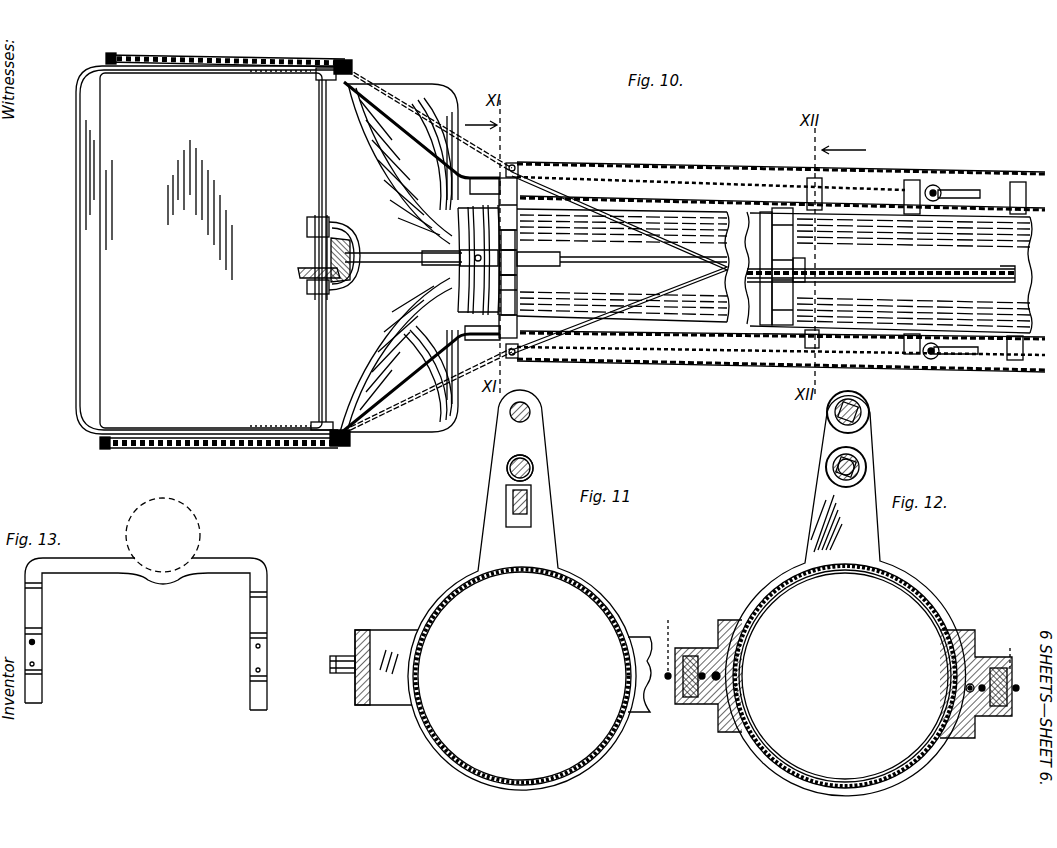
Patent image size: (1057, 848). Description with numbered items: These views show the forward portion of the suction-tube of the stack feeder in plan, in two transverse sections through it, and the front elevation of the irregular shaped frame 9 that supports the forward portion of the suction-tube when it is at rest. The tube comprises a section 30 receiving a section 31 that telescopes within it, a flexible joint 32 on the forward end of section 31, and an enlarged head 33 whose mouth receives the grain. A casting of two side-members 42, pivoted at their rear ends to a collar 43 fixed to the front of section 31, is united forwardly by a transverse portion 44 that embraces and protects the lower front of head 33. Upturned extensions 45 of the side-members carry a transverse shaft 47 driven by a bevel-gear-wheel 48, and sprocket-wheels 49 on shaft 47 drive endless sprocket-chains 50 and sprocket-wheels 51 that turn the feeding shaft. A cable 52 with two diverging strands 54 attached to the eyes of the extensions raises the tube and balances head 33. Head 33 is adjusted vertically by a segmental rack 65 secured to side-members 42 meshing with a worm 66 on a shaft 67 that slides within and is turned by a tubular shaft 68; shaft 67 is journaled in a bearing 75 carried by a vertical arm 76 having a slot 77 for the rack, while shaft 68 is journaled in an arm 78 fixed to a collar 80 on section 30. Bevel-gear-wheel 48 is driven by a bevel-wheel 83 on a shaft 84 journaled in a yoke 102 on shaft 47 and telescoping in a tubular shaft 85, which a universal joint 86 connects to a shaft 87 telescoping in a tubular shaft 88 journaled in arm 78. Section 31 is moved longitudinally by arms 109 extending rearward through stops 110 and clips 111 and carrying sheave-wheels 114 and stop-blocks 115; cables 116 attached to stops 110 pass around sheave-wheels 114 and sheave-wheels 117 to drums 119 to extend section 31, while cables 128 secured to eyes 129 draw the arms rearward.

In FIG. 13, the irregular shaped frame 9 is at (146, 634).
In FIG. 12, the section 30 is at (902, 586).
In FIG. 11, the section 31 is at (522, 676).
In FIG. 12, the section 31 is at (928, 610).
In FIG. 13, the section 31 is at (163, 535).
In FIG. 10, the flexible joint 32 is at (484, 340).
In FIG. 10, the enlarged head 33 is at (211, 250).
In FIG. 10, the side-members 42 is at (186, 57).
In FIG. 10, the collar 43 is at (520, 214).
In FIG. 11, the collar 43 is at (446, 584).
In FIG. 10, the transverse portion 44 is at (76, 264).
In FIG. 10, the upturned extensions 45 is at (318, 78).
In FIG. 10, the transverse shaft 47 is at (319, 178).
In FIG. 10, the bevel-gear-wheel 48 is at (300, 270).
In FIG. 10, the sprocket-wheels 49 is at (348, 62).
In FIG. 10, the endless sprocket-chains 50 is at (238, 57).
In FIG. 10, the sprocket-wheels 51 is at (106, 55).
In FIG. 10, the cable 52 is at (893, 270).
In FIG. 10, the strands 54 is at (404, 110).
In FIG. 10, the segmental rack 65 is at (450, 232).
In FIG. 11, the segmental rack 65 is at (513, 498).
In FIG. 10, the worm 66 is at (520, 292).
In FIG. 11, the worm 66 is at (507, 470).
In FIG. 11, the shaft 67 is at (534, 466).
In FIG. 12, the shaft 67 is at (834, 468).
In FIG. 12, the tubular shaft 68 is at (860, 468).
In FIG. 10, the bearing 75 is at (530, 256).
In FIG. 10, the vertical arm 76 is at (520, 272).
In FIG. 11, the vertical arm 76 is at (520, 456).
In FIG. 11, the slot 77 is at (508, 524).
In FIG. 10, the arm 78 is at (800, 254).
In FIG. 12, the arm 78 is at (833, 523).
In FIG. 10, the collar 80 is at (798, 228).
In FIG. 12, the collar 80 is at (768, 588).
In FIG. 10, the bevel-wheel 83 is at (320, 240).
In FIG. 10, the shaft 84 is at (392, 253).
In FIG. 10, the tubular shaft 85 is at (426, 262).
In FIG. 10, the universal joint 86 is at (512, 240).
In FIG. 10, the shaft 87 is at (622, 258).
In FIG. 11, the shaft 87 is at (532, 412).
In FIG. 12, the shaft 87 is at (866, 420).
In FIG. 10, the tubular shaft 88 is at (962, 270).
In FIG. 12, the tubular shaft 88 is at (862, 412).
In FIG. 10, the yoke 102 is at (336, 293).
In FIG. 10, the arms 109 is at (975, 190).
In FIG. 12, the arms 109 is at (690, 656).
In FIG. 10, the stops 110 is at (812, 178).
In FIG. 12, the stops 110 is at (680, 704).
In FIG. 10, the clips 111 is at (910, 182).
In FIG. 10, the sheave-wheels 114 is at (935, 185).
In FIG. 10, the stop-blocks 115 is at (824, 186).
In FIG. 10, the cables 116 is at (698, 166).
In FIG. 12, the cables 116 is at (1000, 650).
In FIG. 10, the sheave-wheels 117 is at (513, 164).
In FIG. 11, the sheave-wheels 117 is at (332, 662).
In FIG. 11, the drums 119 is at (360, 634).
In FIG. 10, the cables 128 is at (612, 196).
In FIG. 12, the cables 128 is at (714, 702).
In FIG. 10, the eyes 129 is at (546, 176).